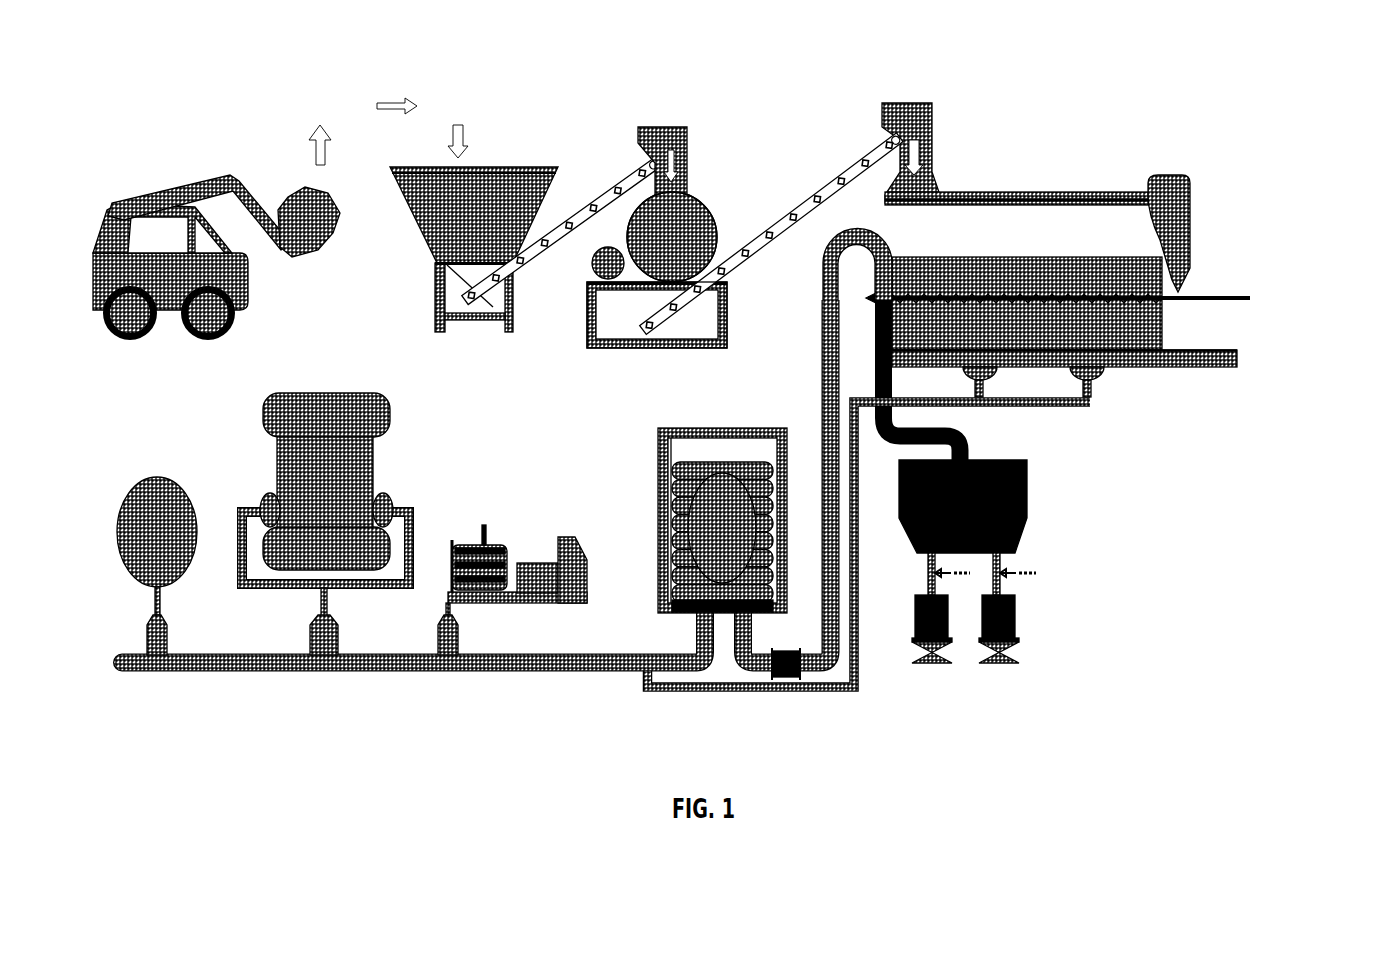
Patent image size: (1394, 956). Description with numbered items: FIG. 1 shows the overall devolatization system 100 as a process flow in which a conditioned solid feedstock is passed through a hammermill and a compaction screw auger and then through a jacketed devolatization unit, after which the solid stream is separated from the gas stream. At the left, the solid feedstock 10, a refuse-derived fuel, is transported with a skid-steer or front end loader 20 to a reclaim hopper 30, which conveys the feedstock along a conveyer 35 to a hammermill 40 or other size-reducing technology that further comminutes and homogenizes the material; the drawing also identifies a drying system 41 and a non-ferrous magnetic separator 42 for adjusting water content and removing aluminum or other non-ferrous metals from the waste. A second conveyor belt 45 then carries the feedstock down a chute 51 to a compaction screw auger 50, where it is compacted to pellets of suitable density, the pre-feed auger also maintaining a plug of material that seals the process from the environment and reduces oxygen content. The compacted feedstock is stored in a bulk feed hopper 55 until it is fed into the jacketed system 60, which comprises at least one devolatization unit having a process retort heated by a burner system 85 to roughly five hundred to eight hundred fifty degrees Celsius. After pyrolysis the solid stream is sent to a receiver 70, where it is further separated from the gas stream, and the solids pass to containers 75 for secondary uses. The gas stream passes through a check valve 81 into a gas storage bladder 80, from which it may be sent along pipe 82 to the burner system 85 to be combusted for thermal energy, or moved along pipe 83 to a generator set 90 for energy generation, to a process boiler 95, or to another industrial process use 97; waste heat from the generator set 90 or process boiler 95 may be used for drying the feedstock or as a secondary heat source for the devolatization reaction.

The asphalt recycling system 100 is at (1240, 98).
The solid feedstock 10 is at (320, 200).
The skid-steer loader 20 is at (178, 197).
The hopper 30 is at (528, 160).
The conveyer 35 is at (540, 267).
The hammermill 40 is at (716, 207).
The drying system 41 is at (672, 237).
The non-ferrous magnetic separator 42 is at (657, 315).
The conveyor belt 45 is at (748, 268).
The compaction screw auger 50 is at (1075, 195).
The chute 51 is at (933, 125).
The bulk feed hopper 55 is at (1190, 220).
The jacketed system 60 is at (1165, 337).
The receiver 70 is at (1028, 487).
The containers 75 is at (1013, 628).
The gas storage bladder 80 is at (683, 425).
The check valve 81 is at (803, 672).
The pipe 82 is at (980, 407).
The pipe 83 is at (596, 652).
The burner system 85 is at (1093, 395).
The generator set 90 is at (507, 560).
The process boiler 95 is at (377, 463).
The industrial process use 97 is at (197, 505).